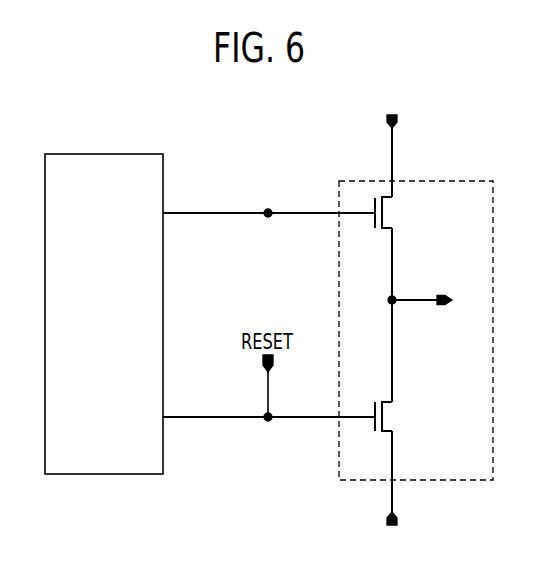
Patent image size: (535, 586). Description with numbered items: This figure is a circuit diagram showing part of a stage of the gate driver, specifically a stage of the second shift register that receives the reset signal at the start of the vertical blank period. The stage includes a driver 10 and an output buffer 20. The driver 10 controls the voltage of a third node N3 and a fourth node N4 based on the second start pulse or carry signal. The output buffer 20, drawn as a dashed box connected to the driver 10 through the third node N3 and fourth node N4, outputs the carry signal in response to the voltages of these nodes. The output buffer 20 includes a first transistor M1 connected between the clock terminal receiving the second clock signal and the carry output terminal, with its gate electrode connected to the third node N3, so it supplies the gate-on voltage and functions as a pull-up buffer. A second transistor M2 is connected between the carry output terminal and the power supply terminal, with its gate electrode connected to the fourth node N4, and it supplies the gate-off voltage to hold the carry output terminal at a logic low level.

The driver 10 is at (104, 154).
The output buffer 20 is at (416, 325).
The first transistor M1 is at (398, 212).
The second transistor M2 is at (398, 416).
The third node N3 is at (269, 200).
The fourth node N4 is at (269, 407).